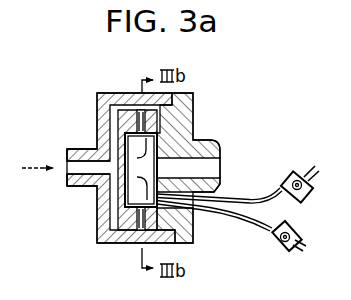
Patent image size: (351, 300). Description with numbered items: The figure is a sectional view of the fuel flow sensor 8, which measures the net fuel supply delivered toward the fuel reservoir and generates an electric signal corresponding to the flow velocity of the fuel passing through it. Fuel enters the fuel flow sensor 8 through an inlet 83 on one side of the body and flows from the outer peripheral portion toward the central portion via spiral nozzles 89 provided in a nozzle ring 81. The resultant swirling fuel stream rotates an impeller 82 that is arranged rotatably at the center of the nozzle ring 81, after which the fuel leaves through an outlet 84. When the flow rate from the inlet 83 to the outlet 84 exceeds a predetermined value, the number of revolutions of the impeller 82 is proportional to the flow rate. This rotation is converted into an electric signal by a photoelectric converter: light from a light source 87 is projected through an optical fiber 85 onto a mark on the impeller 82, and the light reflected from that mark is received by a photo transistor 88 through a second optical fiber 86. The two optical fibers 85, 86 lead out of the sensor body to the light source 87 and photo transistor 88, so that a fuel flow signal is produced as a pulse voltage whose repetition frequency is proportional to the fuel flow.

The fuel flow sensor 8 is at (93, 192).
The nozzle ring 81 is at (157, 123).
The impeller 82 is at (145, 148).
The inlet 83 is at (80, 166).
The outlet 84 is at (212, 167).
The optical fiber 85 is at (275, 198).
The optical fiber 86 is at (222, 214).
The light source 87 is at (305, 201).
The photo transistor 88 is at (279, 247).
The spiral nozzles 89 is at (140, 226).